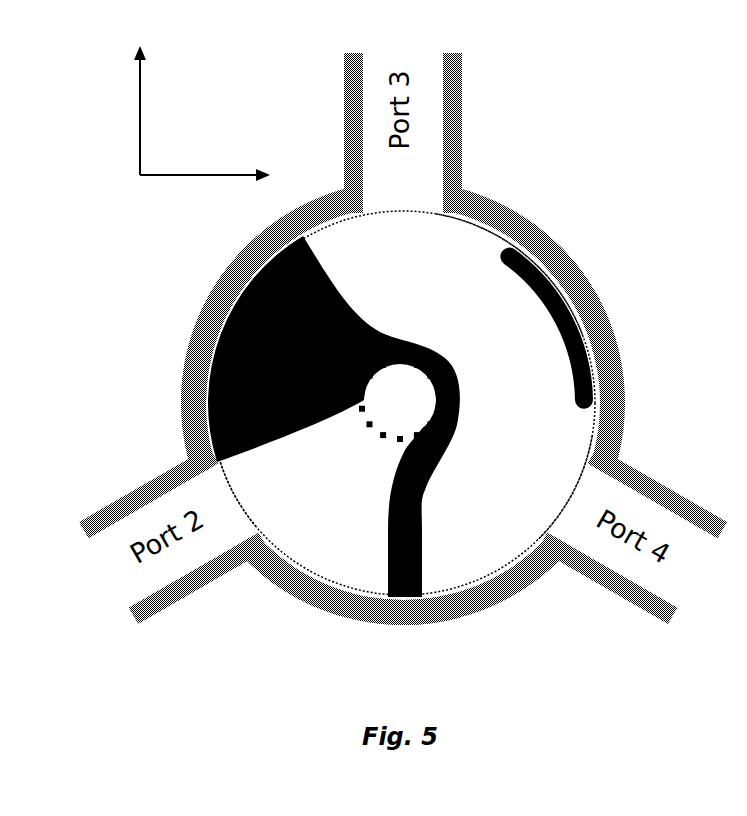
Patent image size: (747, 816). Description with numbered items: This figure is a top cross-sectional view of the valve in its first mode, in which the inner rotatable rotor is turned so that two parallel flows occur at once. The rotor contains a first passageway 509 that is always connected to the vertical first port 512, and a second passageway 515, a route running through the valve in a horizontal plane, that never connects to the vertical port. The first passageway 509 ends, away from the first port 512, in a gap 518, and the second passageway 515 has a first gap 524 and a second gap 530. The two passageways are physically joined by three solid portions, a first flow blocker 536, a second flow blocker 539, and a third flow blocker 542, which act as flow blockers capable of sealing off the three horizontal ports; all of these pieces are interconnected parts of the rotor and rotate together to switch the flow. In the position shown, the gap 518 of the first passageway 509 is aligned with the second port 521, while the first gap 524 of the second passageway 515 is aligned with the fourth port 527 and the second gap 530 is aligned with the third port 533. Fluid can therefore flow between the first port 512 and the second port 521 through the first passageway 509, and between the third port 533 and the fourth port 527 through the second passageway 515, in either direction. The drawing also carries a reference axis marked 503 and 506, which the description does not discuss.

The coordinate axes 503 is at (118, 110).
The horizontal axis arrow 506 is at (205, 200).
The first passageway 509 is at (282, 483).
The vertical port 512 is at (398, 426).
The second passageway 515 is at (509, 234).
The gap 518 is at (299, 602).
The second port 521 is at (173, 535).
The first gap 524 is at (600, 485).
The fourth port 527 is at (639, 531).
The second gap 530 is at (557, 277).
The third port 533 is at (450, 133).
The first flow blocker 536 is at (610, 307).
The second flow blocker 539 is at (418, 630).
The third flow blocker 542 is at (189, 331).